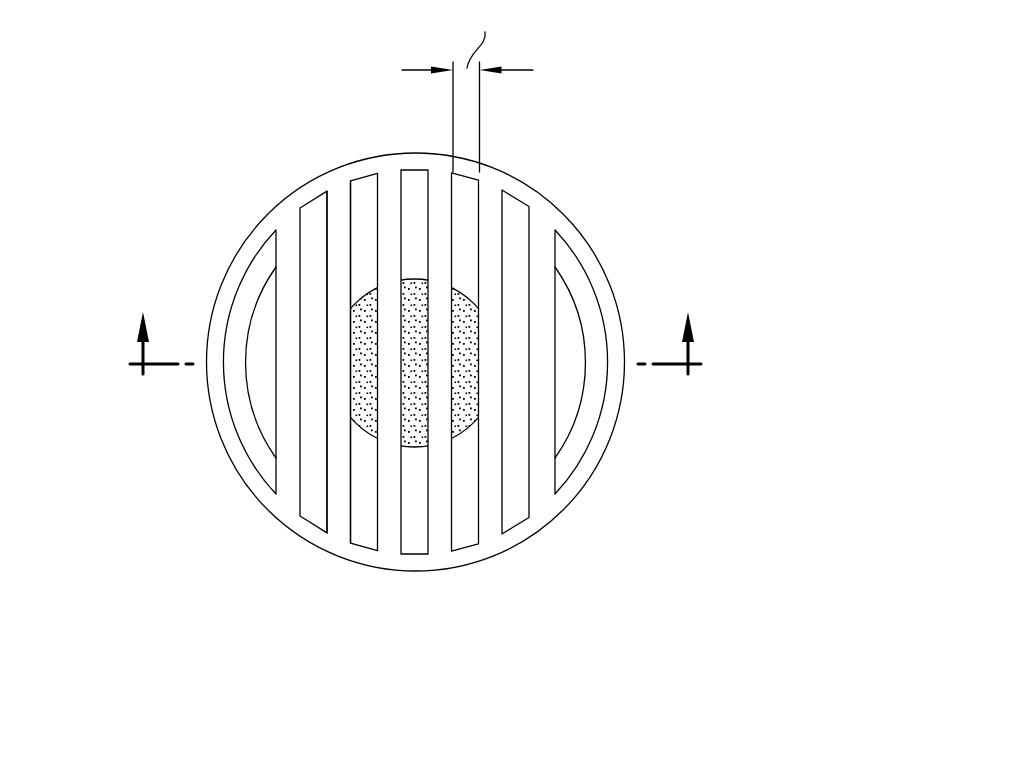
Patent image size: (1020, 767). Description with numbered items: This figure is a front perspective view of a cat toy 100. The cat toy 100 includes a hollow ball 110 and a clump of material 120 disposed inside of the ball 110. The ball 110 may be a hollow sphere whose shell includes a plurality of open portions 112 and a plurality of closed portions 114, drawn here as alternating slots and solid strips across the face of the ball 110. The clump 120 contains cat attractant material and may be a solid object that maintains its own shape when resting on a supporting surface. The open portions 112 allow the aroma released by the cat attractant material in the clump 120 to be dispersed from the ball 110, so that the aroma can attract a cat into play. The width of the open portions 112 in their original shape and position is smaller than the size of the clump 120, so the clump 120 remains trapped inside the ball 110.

The cat toy 100 is at (636, 121).
The hollow ball 110 is at (339, 563).
The open portions 112 is at (417, 528).
The closed portions 114 is at (338, 483).
The clump of material 120 is at (374, 292).